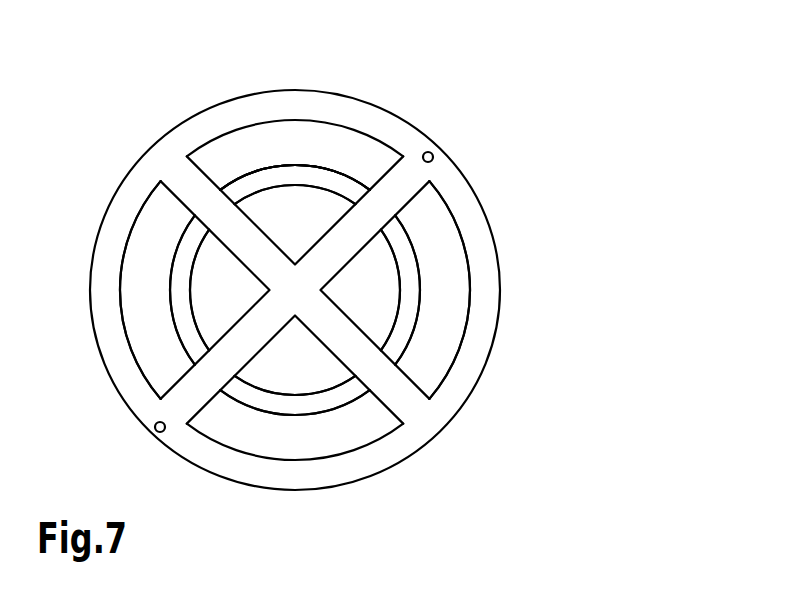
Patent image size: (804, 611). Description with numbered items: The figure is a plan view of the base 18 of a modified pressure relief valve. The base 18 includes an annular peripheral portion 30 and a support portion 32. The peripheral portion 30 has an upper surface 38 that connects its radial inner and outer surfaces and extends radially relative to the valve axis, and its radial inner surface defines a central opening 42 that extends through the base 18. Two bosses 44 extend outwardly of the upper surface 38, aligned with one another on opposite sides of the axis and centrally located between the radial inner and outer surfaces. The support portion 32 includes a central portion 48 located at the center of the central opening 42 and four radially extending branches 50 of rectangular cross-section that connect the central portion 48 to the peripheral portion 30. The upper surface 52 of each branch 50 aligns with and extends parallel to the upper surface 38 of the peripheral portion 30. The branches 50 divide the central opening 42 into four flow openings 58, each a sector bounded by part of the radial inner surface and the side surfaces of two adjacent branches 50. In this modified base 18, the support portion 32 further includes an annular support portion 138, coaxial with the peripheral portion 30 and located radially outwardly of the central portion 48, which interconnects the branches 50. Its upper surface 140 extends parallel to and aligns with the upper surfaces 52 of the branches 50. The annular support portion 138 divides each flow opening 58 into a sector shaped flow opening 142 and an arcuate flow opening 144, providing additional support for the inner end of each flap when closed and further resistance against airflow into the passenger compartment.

The base 18 is at (503, 308).
The peripheral portion 30 is at (497, 247).
The support portion 32 is at (358, 170).
The upper surface 38 is at (470, 372).
The central opening 42 is at (152, 238).
The bosses 44 is at (156, 430).
The central portion 48 is at (289, 306).
The radially extending branches 50 is at (186, 182).
The upper surface 52 is at (249, 234).
The flow openings 58 is at (321, 140).
The annular support portion 138 is at (257, 175).
The upper surface 140 is at (410, 290).
The sector shaped flow opening 142 is at (249, 200).
The arcuate flow opening 144 is at (280, 142).